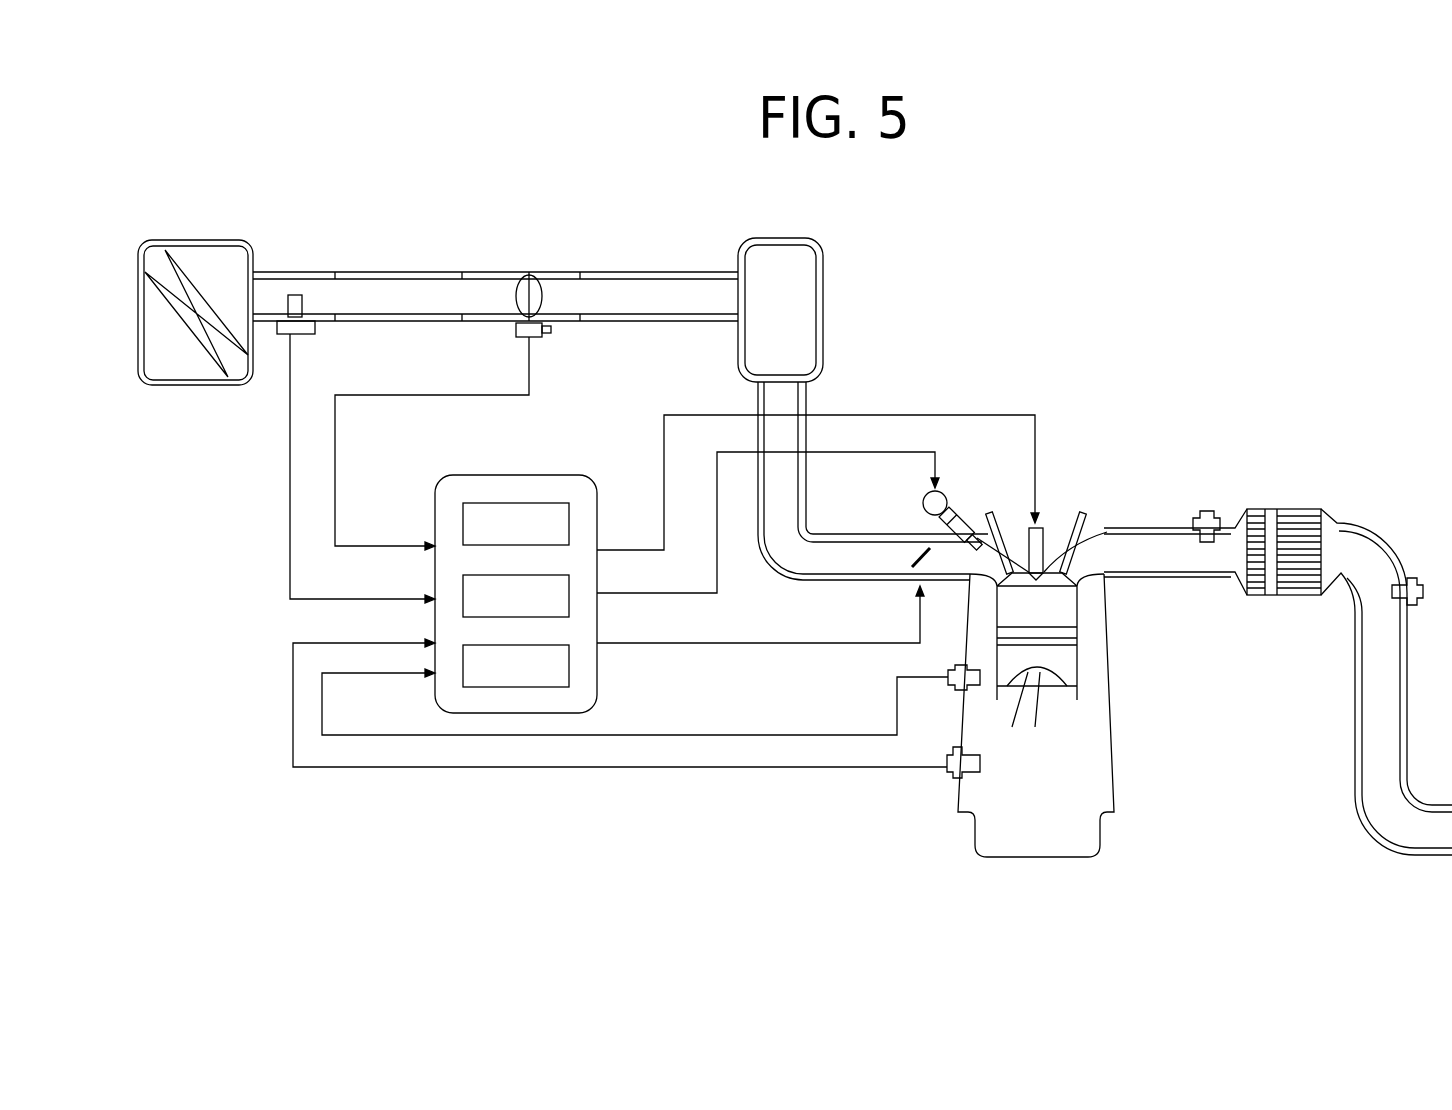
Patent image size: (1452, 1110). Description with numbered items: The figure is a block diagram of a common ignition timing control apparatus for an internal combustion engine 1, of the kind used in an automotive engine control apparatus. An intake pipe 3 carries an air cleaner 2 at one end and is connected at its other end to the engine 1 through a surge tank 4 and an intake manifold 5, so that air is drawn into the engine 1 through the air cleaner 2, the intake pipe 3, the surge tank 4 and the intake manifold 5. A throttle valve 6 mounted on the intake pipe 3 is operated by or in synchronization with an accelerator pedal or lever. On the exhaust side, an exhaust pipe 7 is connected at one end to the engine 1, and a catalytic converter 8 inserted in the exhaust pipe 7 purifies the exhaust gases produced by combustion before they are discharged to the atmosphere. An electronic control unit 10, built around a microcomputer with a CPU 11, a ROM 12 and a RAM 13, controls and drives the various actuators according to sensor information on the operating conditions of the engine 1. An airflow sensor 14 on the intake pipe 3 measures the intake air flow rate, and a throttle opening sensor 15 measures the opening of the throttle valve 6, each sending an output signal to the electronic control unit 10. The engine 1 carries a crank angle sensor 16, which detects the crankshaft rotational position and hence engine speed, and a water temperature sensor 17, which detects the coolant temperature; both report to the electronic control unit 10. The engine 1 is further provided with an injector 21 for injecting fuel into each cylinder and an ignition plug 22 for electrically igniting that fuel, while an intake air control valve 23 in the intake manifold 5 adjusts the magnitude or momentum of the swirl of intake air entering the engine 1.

The internal combustion engine 1 is at (1110, 680).
The air cleaner 2 is at (214, 241).
The intake pipe 3 is at (432, 272).
The surge tank 4 is at (784, 238).
The intake manifold 5 is at (830, 533).
The throttle valve 6 is at (543, 292).
The exhaust pipe 7 is at (1157, 527).
The catalytic converter 8 is at (1270, 509).
The electronic control unit 10 is at (542, 565).
The CPU 11 is at (570, 521).
The ROM 12 is at (570, 596).
The RAM 13 is at (570, 670).
The airflow sensor 14 is at (312, 334).
The throttle opening sensor 15 is at (548, 340).
The crank angle sensor 16 is at (955, 750).
The water temperature sensor 17 is at (948, 676).
The injector 21 is at (957, 505).
The ignition plug 22 is at (1043, 528).
The intake air control valve 23 is at (915, 562).